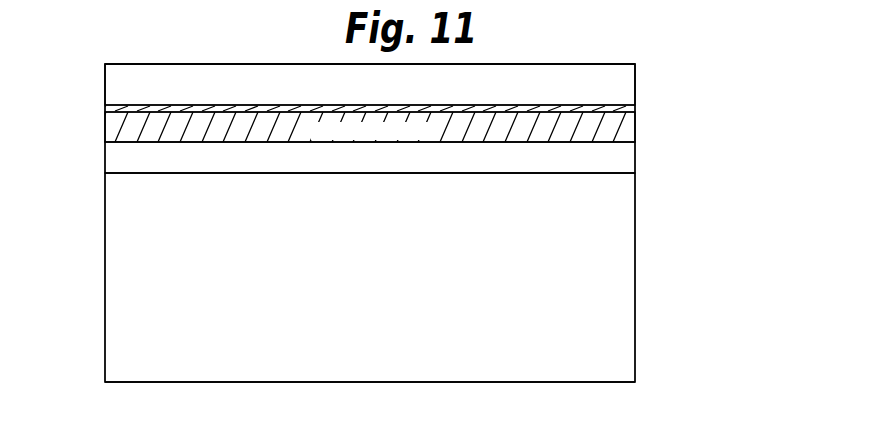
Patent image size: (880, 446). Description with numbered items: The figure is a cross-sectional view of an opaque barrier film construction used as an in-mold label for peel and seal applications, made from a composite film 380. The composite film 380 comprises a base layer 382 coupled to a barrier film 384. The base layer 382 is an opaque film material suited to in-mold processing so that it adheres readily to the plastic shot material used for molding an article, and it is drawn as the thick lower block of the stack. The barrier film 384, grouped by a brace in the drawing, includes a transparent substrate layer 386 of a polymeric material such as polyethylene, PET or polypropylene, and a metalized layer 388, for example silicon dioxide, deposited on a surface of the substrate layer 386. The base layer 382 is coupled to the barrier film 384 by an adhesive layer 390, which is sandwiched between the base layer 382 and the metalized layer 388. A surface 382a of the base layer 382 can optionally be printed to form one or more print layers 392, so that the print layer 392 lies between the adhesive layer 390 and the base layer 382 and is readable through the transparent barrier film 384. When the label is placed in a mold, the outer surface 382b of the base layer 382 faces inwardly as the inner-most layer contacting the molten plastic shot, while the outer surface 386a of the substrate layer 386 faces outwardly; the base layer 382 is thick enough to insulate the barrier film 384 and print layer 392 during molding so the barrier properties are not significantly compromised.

The composite film 380 is at (680, 48).
The base layer 382 is at (116, 314).
The surface of base layer 382a is at (612, 172).
The outer surface of base layer 382b is at (618, 382).
The barrier film 384 is at (95, 63).
The transparent substrate layer 386 is at (625, 83).
The outer surface of substrate layer 386a is at (573, 63).
The metalized layer 388 is at (635, 107).
The adhesive layer 390 is at (110, 125).
The print layer 392 is at (113, 163).